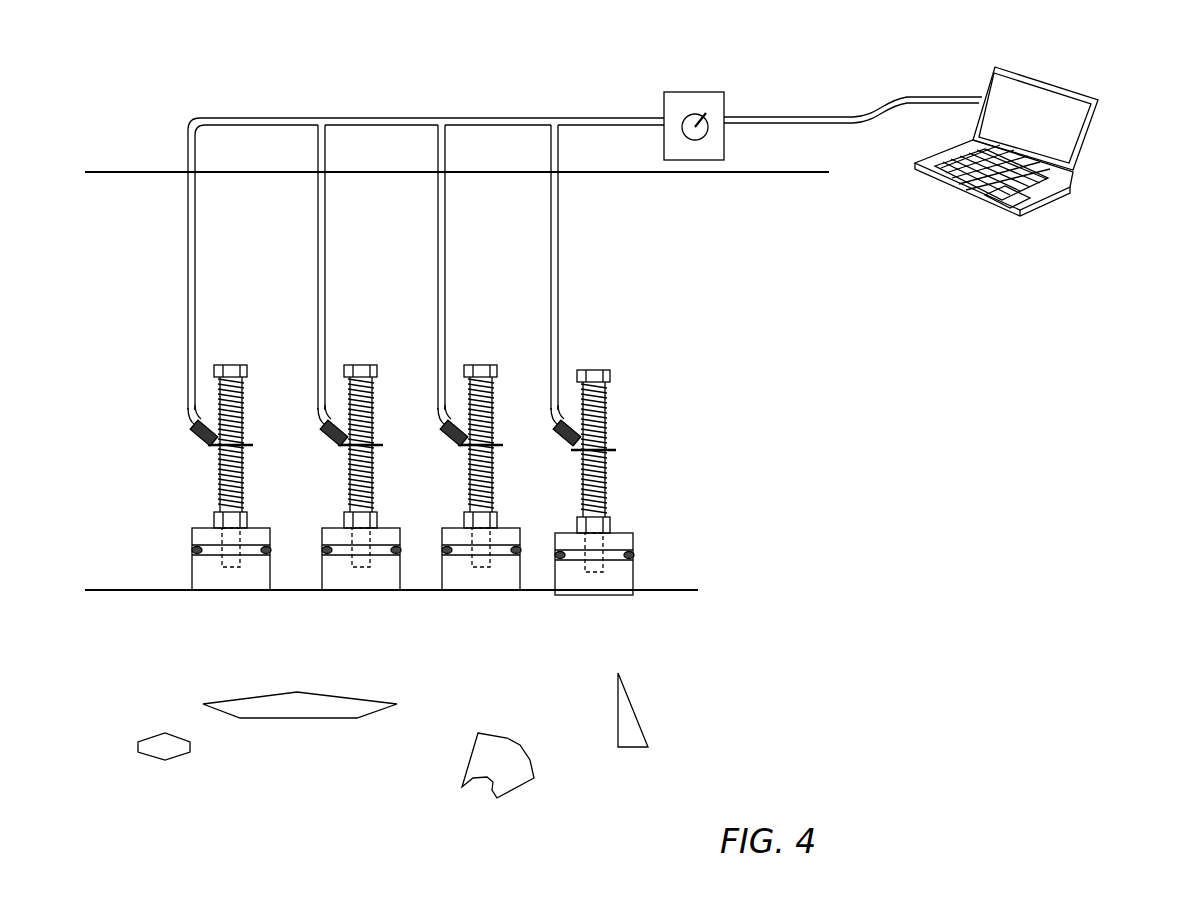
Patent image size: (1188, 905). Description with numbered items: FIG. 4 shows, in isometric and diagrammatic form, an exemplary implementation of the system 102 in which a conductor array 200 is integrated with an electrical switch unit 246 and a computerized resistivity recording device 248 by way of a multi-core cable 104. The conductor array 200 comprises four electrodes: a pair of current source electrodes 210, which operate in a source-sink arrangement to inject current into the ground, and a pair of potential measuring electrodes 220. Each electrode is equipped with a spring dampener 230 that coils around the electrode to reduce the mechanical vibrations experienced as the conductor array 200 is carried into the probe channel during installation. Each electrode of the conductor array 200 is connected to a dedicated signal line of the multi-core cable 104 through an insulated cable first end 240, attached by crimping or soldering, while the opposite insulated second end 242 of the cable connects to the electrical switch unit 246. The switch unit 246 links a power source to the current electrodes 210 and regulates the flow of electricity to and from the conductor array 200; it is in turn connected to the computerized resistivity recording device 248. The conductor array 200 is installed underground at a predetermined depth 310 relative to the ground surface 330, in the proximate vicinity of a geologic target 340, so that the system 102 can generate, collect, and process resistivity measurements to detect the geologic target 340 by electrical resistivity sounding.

The system 102 is at (488, 58).
The multi-core cable 104 is at (290, 110).
The conductor array 200 is at (660, 297).
The current source electrodes 210 is at (232, 365).
The potential measuring electrodes 220 is at (362, 365).
The spring dampener 230 is at (244, 400).
The insulated cable first end 240 is at (192, 425).
The insulated second end 242 is at (640, 117).
The electrical switch unit 246 is at (724, 103).
The computerized resistivity recording device 248 is at (1090, 141).
The predetermined depth 310 is at (678, 590).
The ground surface 330 is at (223, 170).
The geologic target 340 is at (152, 735).